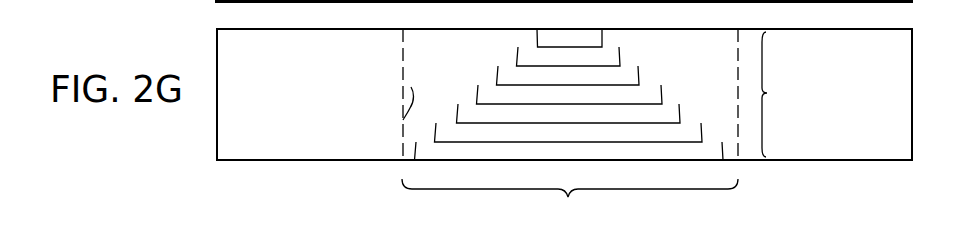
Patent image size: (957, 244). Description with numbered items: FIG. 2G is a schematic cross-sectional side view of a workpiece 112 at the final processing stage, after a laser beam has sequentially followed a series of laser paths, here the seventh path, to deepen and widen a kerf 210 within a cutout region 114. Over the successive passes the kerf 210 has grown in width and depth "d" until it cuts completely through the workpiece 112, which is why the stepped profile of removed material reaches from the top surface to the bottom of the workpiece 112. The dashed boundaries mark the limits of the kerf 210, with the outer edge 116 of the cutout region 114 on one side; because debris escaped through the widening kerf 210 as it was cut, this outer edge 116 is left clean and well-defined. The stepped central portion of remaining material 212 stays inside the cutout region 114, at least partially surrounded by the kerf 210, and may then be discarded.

The workpiece 112 is at (280, 108).
The cutout region 114 is at (627, 130).
The outer edge 116 is at (404, 73).
The kerf 210 is at (410, 108).
The remaining material 212 is at (463, 82).